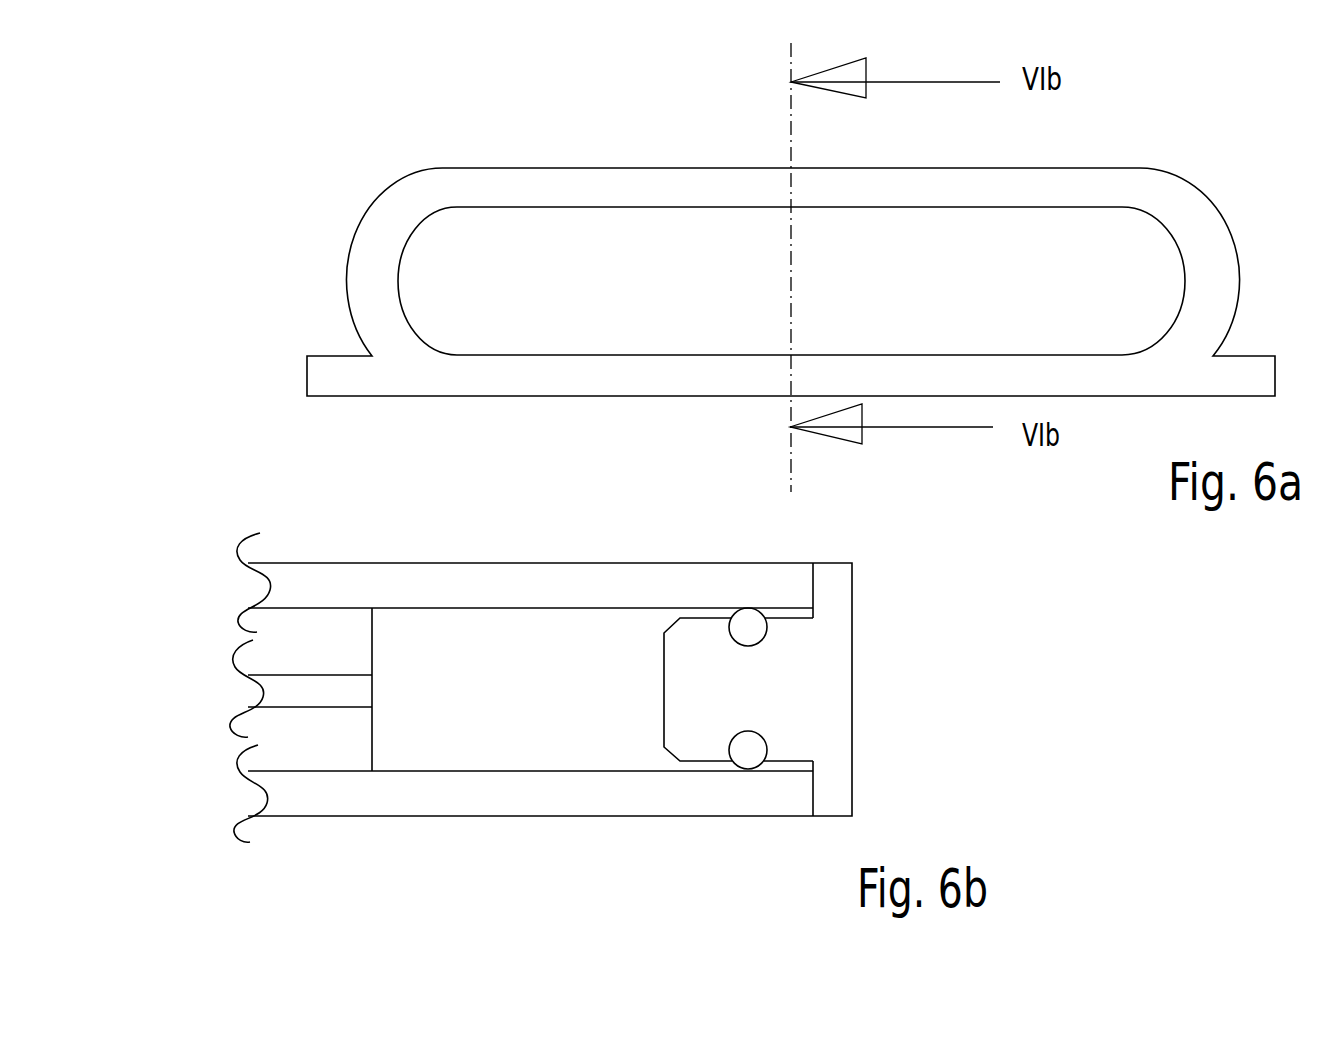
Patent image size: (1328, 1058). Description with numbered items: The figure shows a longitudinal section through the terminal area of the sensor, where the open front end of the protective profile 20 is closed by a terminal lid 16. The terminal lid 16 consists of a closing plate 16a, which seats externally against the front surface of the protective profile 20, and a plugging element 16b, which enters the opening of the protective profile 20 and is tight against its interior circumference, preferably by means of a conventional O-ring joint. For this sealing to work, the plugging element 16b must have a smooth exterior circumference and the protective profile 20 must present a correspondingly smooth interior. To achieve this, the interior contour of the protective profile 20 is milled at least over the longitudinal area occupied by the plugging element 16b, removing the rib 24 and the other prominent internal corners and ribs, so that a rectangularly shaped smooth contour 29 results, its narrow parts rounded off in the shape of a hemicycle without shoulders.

In FIG. 6A, the protective profile 20 is at (1163, 200).
In FIG. 6B, the protective profile 20 is at (443, 575).
In FIG. 6A, the smooth contour 29 is at (605, 208).
In FIG. 6B, the smooth contour 29 is at (515, 608).
In FIG. 6B, the rib 24 is at (352, 738).
In FIG. 6B, the terminal lid 16 is at (842, 663).
In FIG. 6B, the closing plate 16a is at (832, 590).
In FIG. 6B, the plugging element 16b is at (738, 688).